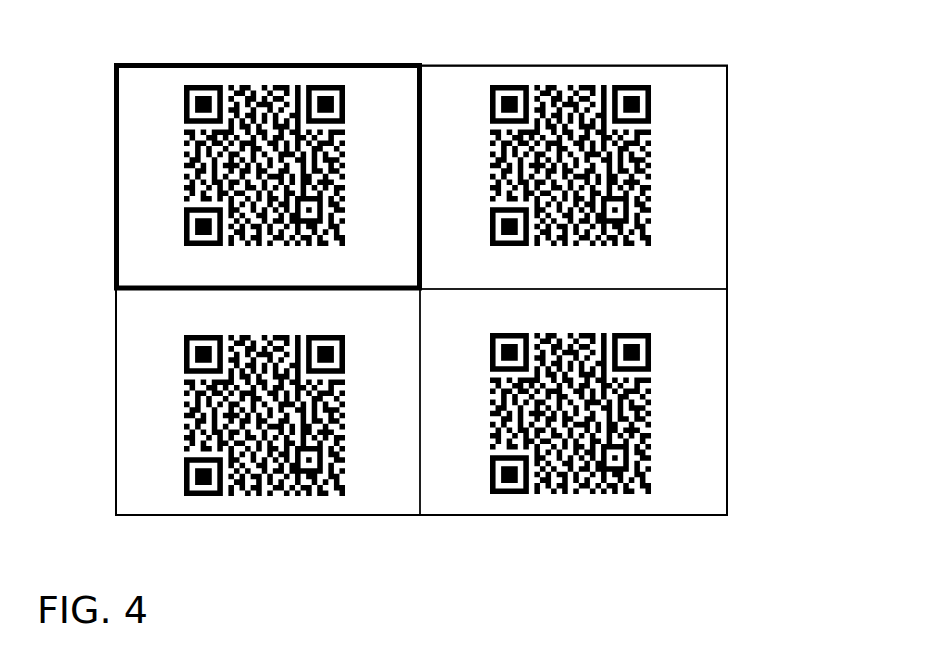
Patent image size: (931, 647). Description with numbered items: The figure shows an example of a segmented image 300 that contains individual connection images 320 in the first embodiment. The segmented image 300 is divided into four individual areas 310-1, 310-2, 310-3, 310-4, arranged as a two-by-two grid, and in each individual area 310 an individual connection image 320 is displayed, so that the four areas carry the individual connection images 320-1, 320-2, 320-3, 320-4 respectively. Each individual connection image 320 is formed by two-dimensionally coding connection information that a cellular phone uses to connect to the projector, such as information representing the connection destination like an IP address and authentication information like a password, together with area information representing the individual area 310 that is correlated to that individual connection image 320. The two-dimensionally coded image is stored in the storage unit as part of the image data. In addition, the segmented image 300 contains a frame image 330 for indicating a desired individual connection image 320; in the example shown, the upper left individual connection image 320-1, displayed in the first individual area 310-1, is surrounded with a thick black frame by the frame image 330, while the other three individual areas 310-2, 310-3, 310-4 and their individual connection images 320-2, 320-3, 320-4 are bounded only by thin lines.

The segmented image 300 is at (711, 36).
The individual area 310 is at (642, 48).
The first individual area 310-1 is at (162, 84).
The second individual area 310-2 is at (445, 90).
The third individual area 310-3 is at (172, 490).
The fourth individual area 310-4 is at (452, 490).
The individual connection image 320 is at (742, 122).
The upper left individual connection image 320-1 is at (293, 84).
The second individual connection image 320-2 is at (577, 87).
The third individual connection image 320-3 is at (253, 490).
The fourth individual connection image 320-4 is at (533, 490).
The frame image 330 is at (368, 63).